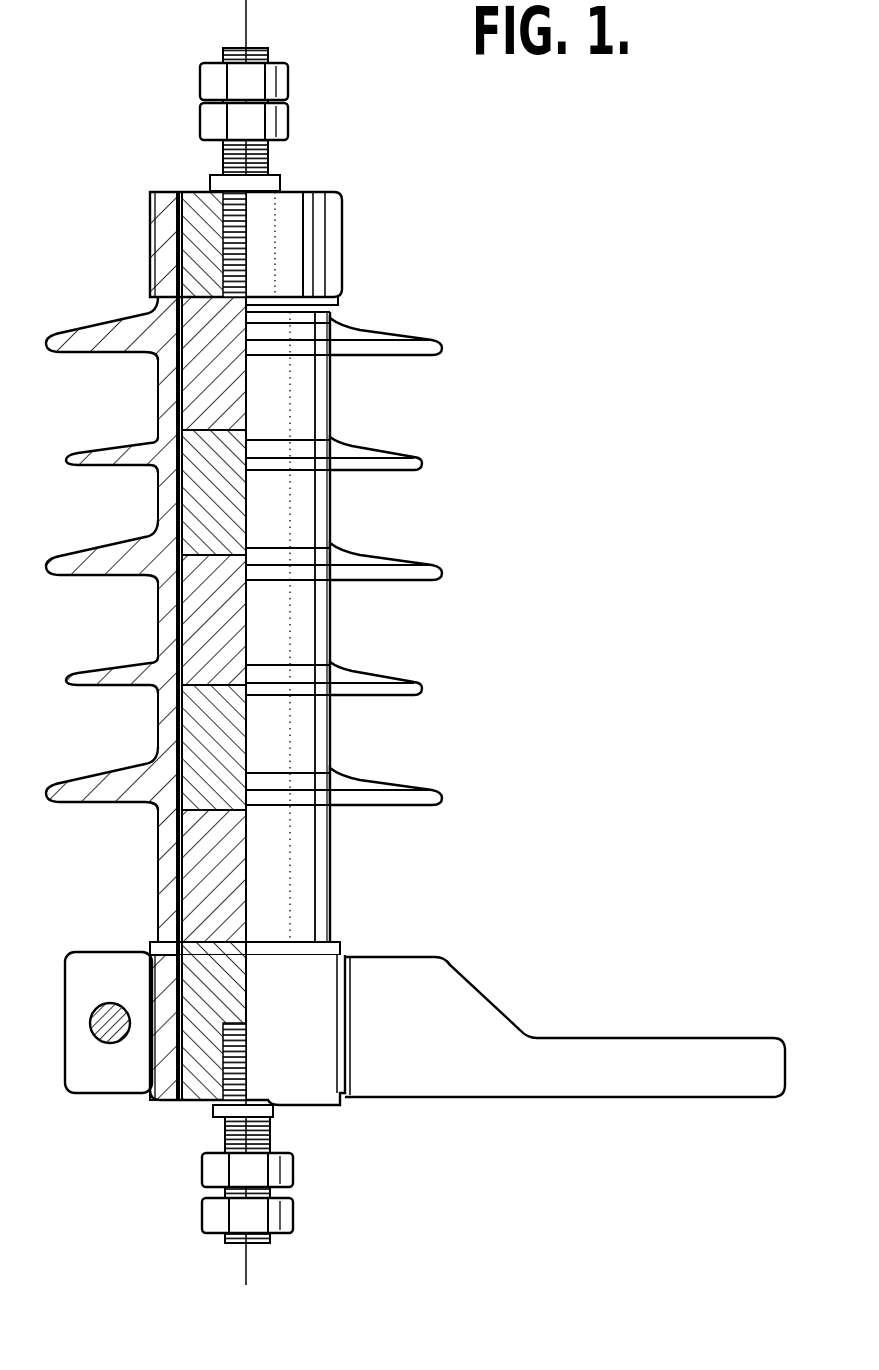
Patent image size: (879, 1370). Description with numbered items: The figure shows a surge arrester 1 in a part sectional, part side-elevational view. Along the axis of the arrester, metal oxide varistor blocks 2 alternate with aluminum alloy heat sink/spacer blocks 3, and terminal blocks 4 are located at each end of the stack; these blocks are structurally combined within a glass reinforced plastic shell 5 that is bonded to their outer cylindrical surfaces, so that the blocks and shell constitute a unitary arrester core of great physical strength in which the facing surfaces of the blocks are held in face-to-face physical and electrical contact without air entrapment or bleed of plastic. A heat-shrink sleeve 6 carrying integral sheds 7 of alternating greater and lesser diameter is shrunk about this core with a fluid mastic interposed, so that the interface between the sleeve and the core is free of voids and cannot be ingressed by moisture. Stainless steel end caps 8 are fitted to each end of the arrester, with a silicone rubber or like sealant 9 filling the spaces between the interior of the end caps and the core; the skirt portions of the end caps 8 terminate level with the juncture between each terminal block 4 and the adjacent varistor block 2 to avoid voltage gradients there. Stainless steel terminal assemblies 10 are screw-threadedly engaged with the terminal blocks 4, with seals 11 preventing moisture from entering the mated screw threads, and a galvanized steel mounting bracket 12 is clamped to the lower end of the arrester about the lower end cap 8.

The surge arrester 1 is at (414, 642).
The metal oxide varistor blocks 2 is at (190, 384).
The heat sink/spacer blocks 3 is at (195, 498).
The terminal blocks 4 is at (205, 272).
The glass reinforced plastic shell 5 is at (158, 908).
The heat-shrink sleeve 6 is at (330, 640).
The sheds 7 is at (397, 357).
The end caps 8 is at (315, 250).
The sealant 9 is at (150, 200).
The terminal assemblies 10 is at (255, 48).
The seals 11 is at (210, 197).
The mounting bracket 12 is at (545, 1072).